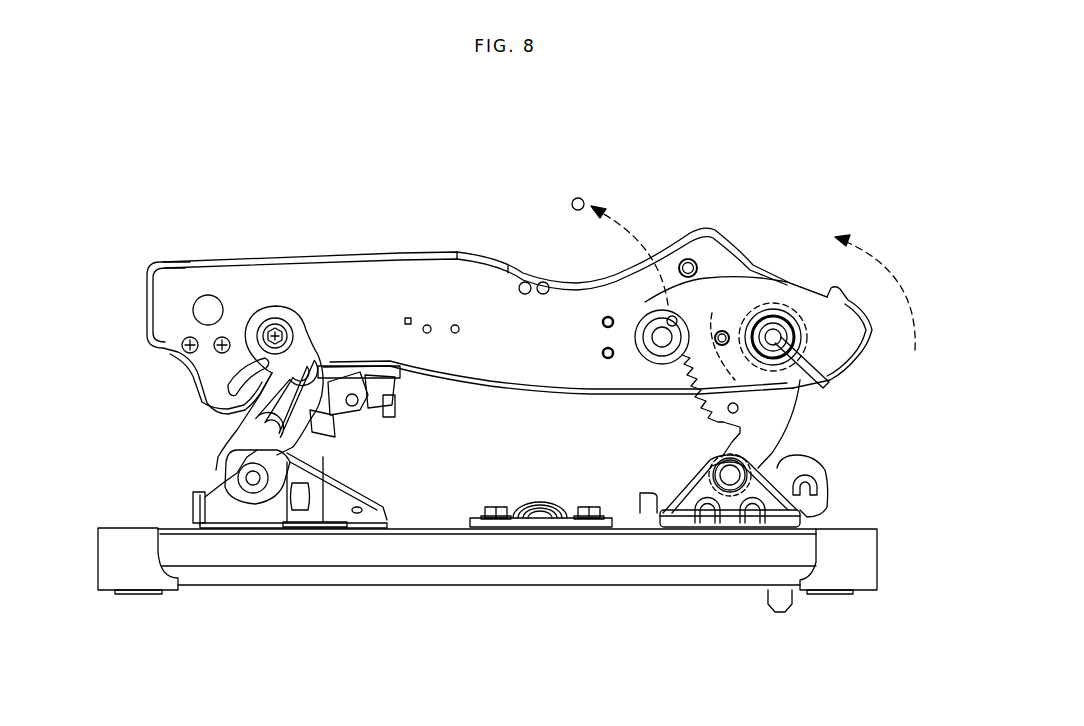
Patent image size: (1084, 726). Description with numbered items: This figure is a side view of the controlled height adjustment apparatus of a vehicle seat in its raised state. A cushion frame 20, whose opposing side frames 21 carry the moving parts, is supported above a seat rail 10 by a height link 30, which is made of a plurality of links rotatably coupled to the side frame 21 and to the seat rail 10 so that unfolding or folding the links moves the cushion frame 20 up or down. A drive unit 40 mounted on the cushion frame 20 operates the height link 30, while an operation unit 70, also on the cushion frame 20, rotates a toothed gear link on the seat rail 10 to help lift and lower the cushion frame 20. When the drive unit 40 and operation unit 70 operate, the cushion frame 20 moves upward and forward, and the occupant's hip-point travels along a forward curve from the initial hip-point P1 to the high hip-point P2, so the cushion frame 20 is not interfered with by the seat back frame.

The seat rail 10 is at (273, 553).
The cushion frame 20 is at (315, 230).
The side frame 21 is at (412, 285).
The height link 30 is at (214, 433).
The drive unit 40 is at (347, 437).
The operation unit 70 is at (670, 222).
The initial hip-point P1 is at (672, 320).
The high hip-point P2 is at (578, 198).